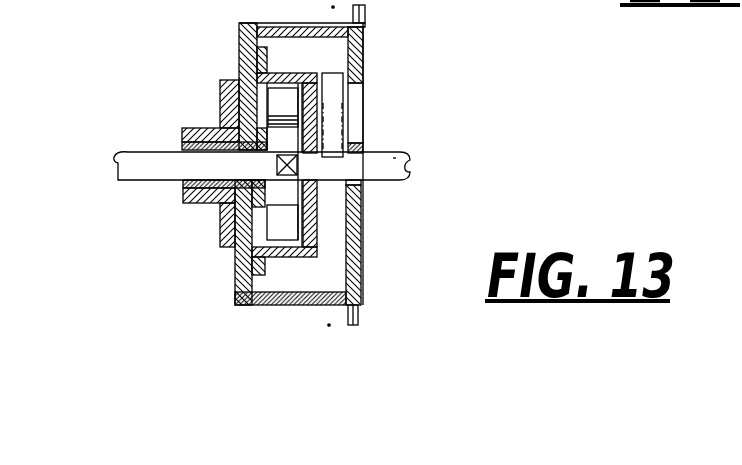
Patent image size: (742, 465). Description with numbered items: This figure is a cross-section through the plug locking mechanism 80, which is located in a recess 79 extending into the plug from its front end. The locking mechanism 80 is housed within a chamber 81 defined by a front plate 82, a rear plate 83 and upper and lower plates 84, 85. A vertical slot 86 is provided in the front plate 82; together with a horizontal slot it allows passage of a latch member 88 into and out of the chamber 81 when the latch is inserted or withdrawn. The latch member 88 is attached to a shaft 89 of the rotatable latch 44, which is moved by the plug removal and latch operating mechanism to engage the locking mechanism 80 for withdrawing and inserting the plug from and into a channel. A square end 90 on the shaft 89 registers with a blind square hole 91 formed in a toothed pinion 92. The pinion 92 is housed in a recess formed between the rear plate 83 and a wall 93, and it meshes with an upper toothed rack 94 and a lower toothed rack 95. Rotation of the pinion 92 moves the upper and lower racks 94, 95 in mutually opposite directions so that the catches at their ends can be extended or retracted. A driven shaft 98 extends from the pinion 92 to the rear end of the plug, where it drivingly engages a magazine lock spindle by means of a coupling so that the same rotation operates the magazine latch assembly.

The rotatable latch 44 is at (422, 170).
The recess 79 is at (338, 16).
The plug locking mechanism 80 is at (372, 48).
The chamber 81 is at (333, 278).
The front plate 82 is at (354, 253).
The rear plate 83 is at (244, 260).
The upper plate 84 is at (270, 38).
The lower plate 85 is at (262, 305).
The vertical slot 86 is at (363, 83).
The latch member 88 is at (326, 118).
The shaft 89 is at (393, 158).
The square end 90 is at (298, 170).
The blind square hole 91 is at (275, 163).
The toothed pinion 92 is at (277, 228).
The wall 93 is at (316, 208).
The upper toothed rack 94 is at (278, 100).
The lower toothed rack 95 is at (228, 233).
The driven shaft 98 is at (143, 155).